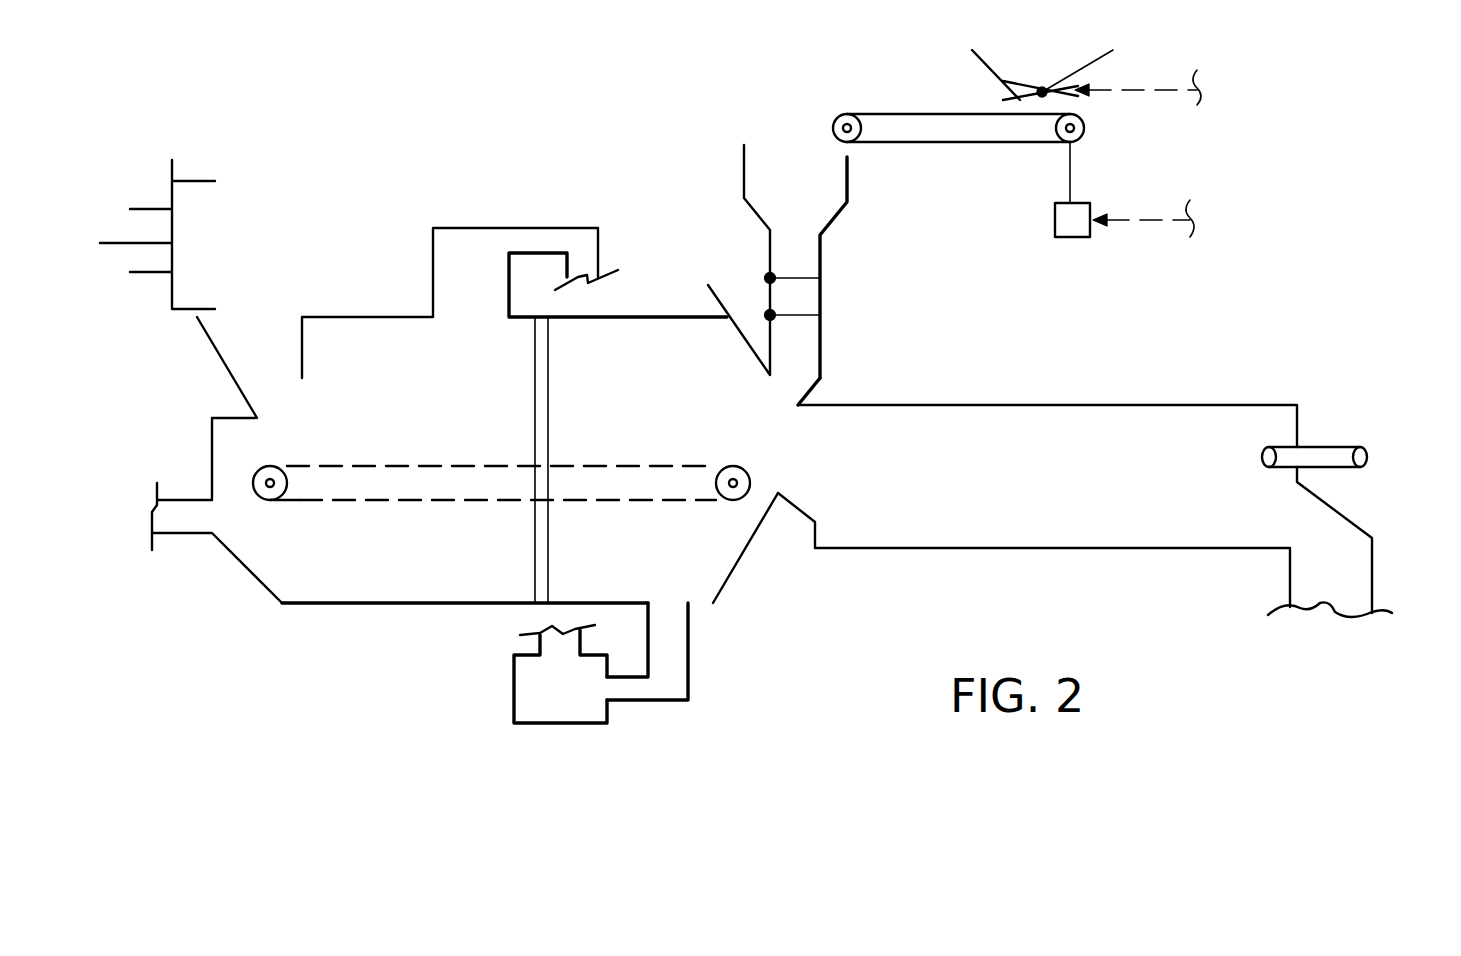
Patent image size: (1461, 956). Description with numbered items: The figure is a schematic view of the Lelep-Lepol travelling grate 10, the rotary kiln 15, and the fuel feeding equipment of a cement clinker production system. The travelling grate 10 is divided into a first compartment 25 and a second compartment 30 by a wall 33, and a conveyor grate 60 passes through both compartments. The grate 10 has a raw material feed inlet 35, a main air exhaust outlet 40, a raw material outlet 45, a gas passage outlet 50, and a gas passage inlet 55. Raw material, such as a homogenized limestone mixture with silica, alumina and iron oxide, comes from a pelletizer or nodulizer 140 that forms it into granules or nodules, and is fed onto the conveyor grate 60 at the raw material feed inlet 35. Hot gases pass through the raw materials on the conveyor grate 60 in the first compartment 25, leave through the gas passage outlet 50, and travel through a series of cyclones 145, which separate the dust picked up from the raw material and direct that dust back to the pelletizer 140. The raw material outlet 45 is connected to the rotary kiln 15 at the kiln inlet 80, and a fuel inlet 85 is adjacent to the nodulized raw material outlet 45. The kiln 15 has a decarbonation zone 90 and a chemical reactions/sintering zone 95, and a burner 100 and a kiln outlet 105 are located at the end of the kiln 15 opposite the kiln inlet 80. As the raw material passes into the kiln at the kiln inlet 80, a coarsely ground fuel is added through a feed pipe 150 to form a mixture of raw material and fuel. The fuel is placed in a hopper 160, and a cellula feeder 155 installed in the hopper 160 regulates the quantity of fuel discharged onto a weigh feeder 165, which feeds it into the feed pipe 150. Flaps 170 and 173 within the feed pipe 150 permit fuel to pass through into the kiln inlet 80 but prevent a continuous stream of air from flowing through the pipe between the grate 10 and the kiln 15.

The Lelep-Lepol travelling grate 10 is at (690, 317).
The rotary kiln 15 is at (1141, 405).
The first compartment 25 is at (703, 573).
The second compartment 30 is at (337, 582).
The wall 33 is at (548, 388).
The raw material feed inlet 35 is at (270, 348).
The main air exhaust outlet 40 is at (185, 498).
The raw material outlet 45 is at (793, 510).
The gas passage outlet 50 is at (690, 678).
The gas passage inlet 55 is at (460, 228).
The conveyor grate 60 is at (312, 500).
The kiln inlet 80 is at (817, 458).
The fuel inlet 85 is at (795, 380).
The decarbonation zone 90 is at (971, 437).
The chemical reactions/sintering zone 95 is at (1212, 442).
The burner 100 is at (1323, 443).
The kiln outlet 105 is at (1348, 558).
The pelletizer or nodulizer 140 is at (172, 181).
The cyclones 145 is at (525, 695).
The feed pipe 150 is at (822, 238).
The cellula feeder 155 is at (1042, 90).
The hopper 160 is at (975, 62).
The weigh feeder 165 is at (910, 112).
The flap 170 is at (800, 315).
The flap 173 is at (800, 278).